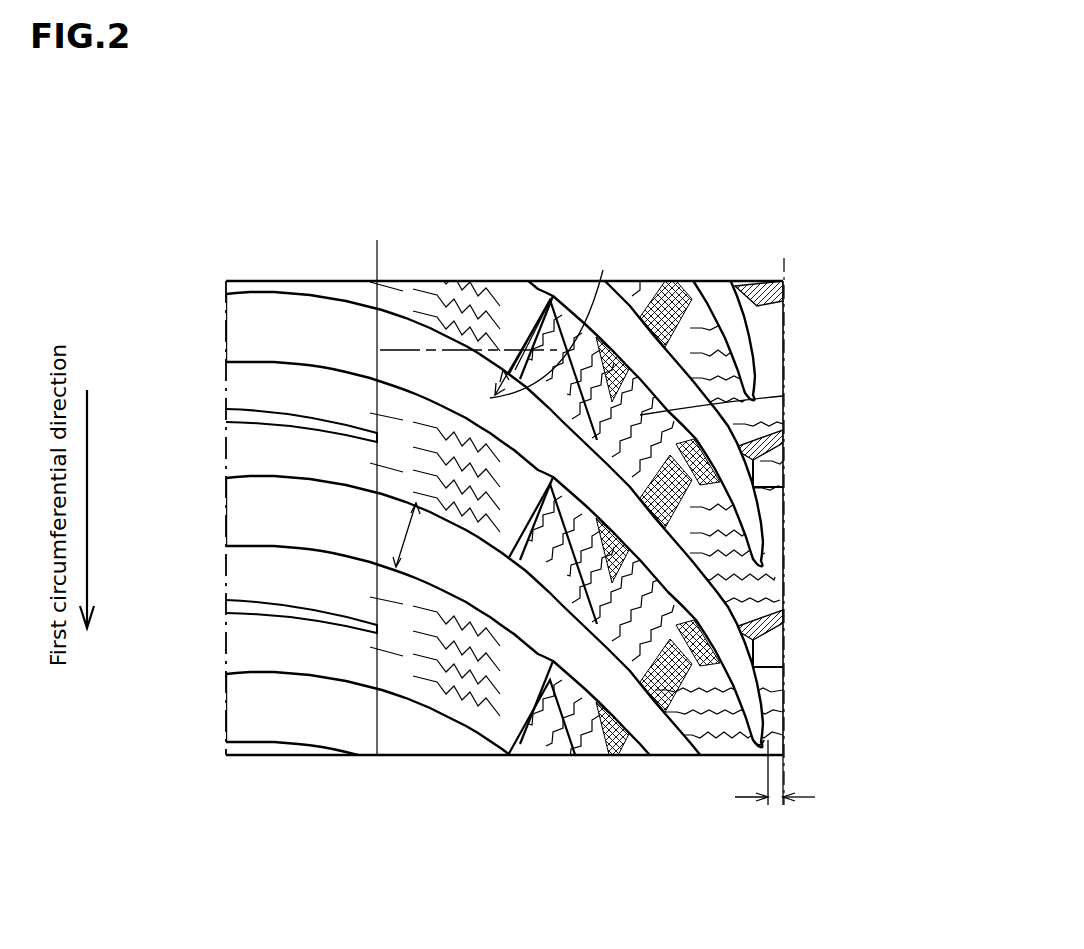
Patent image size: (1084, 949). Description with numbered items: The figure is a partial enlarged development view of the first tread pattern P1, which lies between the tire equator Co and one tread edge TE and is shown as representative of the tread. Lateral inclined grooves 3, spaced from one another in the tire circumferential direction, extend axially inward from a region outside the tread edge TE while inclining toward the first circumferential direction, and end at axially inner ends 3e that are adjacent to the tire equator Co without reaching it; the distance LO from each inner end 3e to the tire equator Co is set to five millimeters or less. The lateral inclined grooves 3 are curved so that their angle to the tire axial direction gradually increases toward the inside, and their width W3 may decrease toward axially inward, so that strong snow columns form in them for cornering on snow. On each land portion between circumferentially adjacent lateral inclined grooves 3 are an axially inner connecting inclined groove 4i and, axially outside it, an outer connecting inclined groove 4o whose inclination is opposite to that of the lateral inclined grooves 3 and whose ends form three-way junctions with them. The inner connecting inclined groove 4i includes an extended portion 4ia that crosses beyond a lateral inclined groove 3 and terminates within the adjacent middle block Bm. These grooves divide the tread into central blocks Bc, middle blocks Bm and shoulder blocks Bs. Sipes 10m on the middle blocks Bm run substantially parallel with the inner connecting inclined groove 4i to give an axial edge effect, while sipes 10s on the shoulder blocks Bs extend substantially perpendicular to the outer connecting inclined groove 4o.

The lateral inclined groove 3 is at (258, 330).
The axially inner end 3e is at (748, 742).
The width W3 is at (416, 538).
The sipe 10s is at (475, 292).
The sipe 10m is at (700, 418).
The axially outer connecting inclined groove 4o is at (507, 290).
The axially inner connecting inclined groove 4i is at (645, 497).
The extended portion 4ia is at (660, 575).
The tread edge TE is at (377, 240).
The tire equator Co is at (777, 517).
The distance LO is at (775, 790).
The first tread pattern P1 is at (705, 175).
The shoulder block Bs is at (485, 483).
The middle block Bm is at (650, 615).
The central block Bc is at (727, 708).